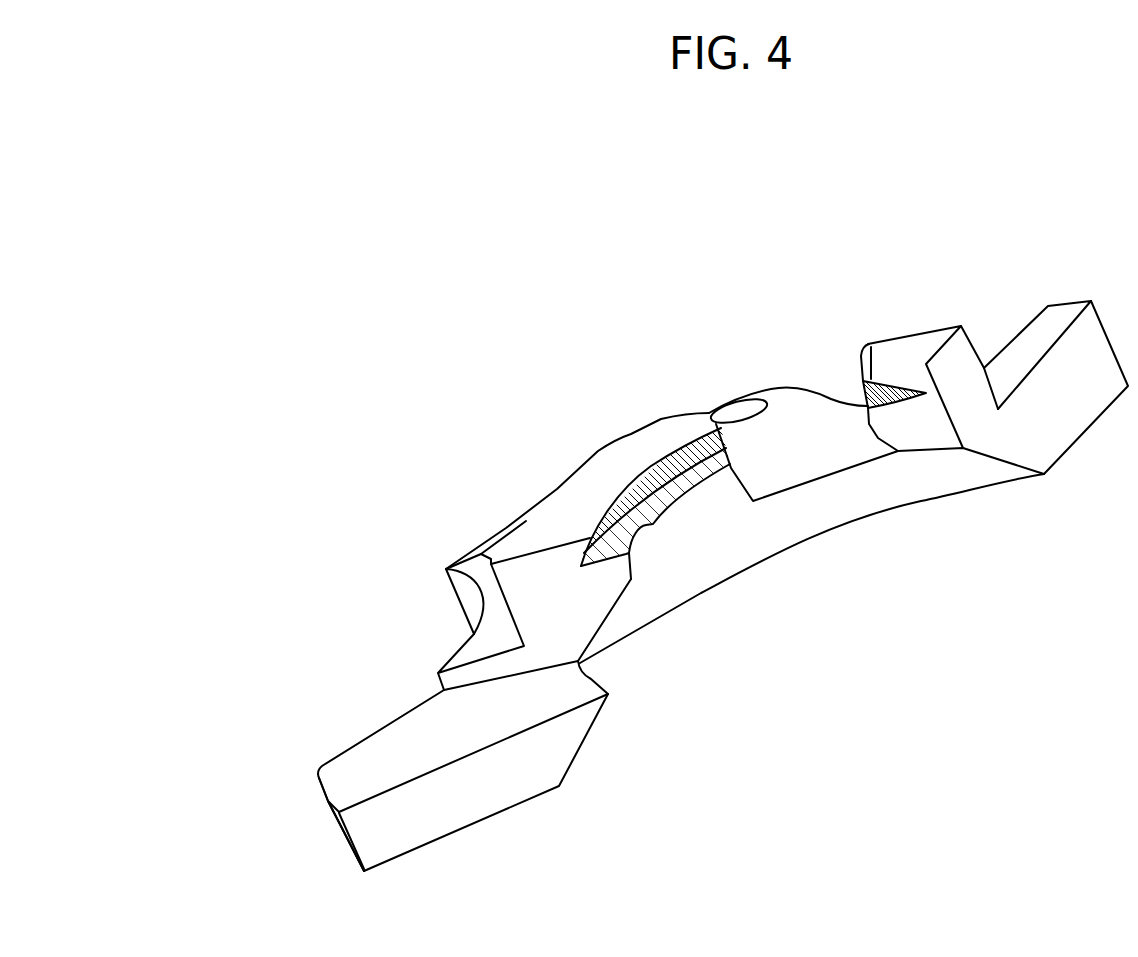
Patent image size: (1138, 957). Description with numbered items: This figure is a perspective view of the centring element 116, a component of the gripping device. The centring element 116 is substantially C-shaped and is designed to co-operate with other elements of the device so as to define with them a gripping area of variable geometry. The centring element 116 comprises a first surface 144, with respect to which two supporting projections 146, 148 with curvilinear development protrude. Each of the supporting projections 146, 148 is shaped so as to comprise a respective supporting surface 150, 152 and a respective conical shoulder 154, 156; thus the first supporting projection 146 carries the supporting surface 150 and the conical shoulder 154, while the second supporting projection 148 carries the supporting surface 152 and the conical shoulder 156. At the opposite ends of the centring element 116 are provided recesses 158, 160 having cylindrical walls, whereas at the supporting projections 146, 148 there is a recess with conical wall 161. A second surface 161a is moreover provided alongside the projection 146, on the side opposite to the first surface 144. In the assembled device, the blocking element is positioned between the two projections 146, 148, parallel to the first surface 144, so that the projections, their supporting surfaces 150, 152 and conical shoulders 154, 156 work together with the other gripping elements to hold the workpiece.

The centring element 116 is at (483, 334).
The first surface 144 is at (832, 433).
The supporting projection 146 is at (573, 497).
The supporting projection 148 is at (951, 355).
The supporting surface 150 is at (640, 527).
The supporting surface 152 is at (864, 396).
The conical shoulder 154 is at (683, 443).
The conical shoulder 156 is at (869, 346).
The recess 158 is at (1025, 333).
The recess 160 is at (412, 718).
The recess with conical wall 161 is at (793, 525).
The second surface 161a is at (367, 760).